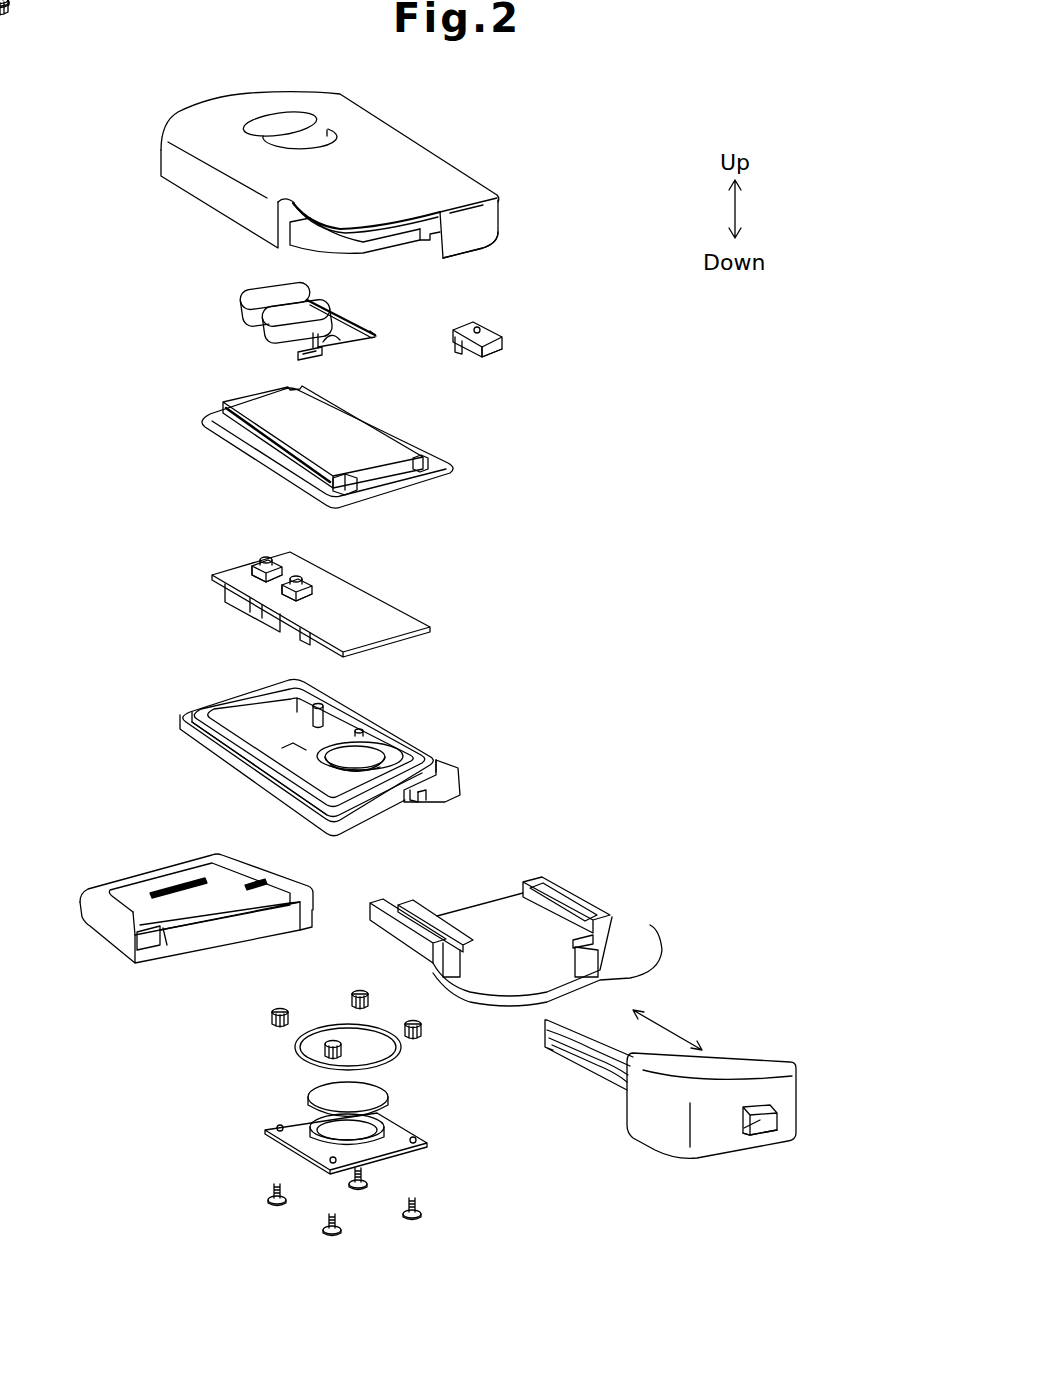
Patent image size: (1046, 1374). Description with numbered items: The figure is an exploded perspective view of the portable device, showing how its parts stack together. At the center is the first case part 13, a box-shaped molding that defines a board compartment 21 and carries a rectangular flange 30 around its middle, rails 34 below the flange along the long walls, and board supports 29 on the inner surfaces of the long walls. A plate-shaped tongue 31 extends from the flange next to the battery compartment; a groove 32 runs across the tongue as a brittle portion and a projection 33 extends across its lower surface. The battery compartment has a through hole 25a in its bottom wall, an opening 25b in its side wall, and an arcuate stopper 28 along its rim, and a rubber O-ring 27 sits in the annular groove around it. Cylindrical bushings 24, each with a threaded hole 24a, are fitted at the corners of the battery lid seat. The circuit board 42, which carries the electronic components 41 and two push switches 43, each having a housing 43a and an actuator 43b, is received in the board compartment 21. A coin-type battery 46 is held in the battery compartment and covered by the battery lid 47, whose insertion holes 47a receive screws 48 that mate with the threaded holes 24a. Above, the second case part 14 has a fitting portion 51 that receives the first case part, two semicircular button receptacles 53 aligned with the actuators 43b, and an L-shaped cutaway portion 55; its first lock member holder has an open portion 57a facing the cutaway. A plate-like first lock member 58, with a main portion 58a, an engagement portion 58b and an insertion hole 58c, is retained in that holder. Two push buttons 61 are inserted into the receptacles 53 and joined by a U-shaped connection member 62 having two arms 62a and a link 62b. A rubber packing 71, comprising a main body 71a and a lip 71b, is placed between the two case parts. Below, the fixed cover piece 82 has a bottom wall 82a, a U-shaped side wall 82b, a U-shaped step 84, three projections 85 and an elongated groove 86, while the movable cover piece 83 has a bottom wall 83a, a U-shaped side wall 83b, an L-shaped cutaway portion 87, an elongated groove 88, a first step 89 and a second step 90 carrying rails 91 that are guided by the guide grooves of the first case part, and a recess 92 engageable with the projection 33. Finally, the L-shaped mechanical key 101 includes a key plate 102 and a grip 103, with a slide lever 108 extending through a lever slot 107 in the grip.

The first case part 13 is at (173, 704).
The second case part 14 is at (443, 128).
The board compartment 21 is at (257, 710).
The bushing 24 is at (423, 1030).
The threaded hole 24a is at (413, 1020).
The through hole 25a is at (375, 752).
The opening 25b is at (403, 760).
The rubber O-ring 27 is at (297, 1053).
The arcuate stopper 28 is at (357, 772).
The board support 29 is at (359, 728).
The rectangular flange 30 is at (190, 728).
The tongue 31 is at (450, 802).
The groove 32 is at (400, 800).
The projection 33 is at (422, 805).
The rail 34 is at (250, 773).
The electronic component 41 is at (257, 613).
The circuit board 42 is at (393, 610).
The push switch 43 is at (301, 538).
The housing 43a is at (317, 587).
The actuator 43b is at (303, 580).
The battery 46 is at (377, 1092).
The battery lid 47 is at (287, 1148).
The insertion hole 47a is at (330, 1160).
The screw 48 is at (420, 1240).
The fitting portion 51 is at (358, 250).
The button receptacle 53 is at (317, 135).
The L-shaped cutaway portion 55 is at (440, 230).
The open portion 57a is at (428, 246).
The first lock member 58 is at (499, 380).
The main portion 58a is at (490, 346).
The engagement portion 58b is at (460, 352).
The insertion hole 58c is at (485, 325).
The push button 61 is at (263, 312).
The U-shaped connection member 62 is at (375, 359).
The arm 62a is at (376, 338).
The link 62b is at (350, 352).
The packing 71 is at (368, 472).
The main body 71a is at (400, 447).
The lip 71b is at (412, 485).
The fixed cover piece 82 is at (196, 950).
The bottom wall 82a is at (193, 935).
The U-shaped side wall 82b is at (140, 945).
The movable cover piece 83 is at (547, 893).
The bottom wall 83a is at (493, 903).
The U-shaped side wall 83b is at (560, 873).
The U-shaped step 84 is at (305, 927).
The projection 85 is at (260, 886).
The elongated groove 86 is at (95, 892).
The L-shaped cutaway portion 87 is at (583, 972).
The elongated groove 88 is at (457, 973).
The first step 89 is at (453, 907).
The second step 90 is at (607, 920).
The rail 91 is at (477, 948).
The recess 92 is at (575, 943).
The mechanical key 101 is at (630, 1109).
The key plate 102 is at (602, 1085).
The grip 103 is at (640, 1132).
The lever slot 107 is at (747, 1135).
The slide lever 108 is at (778, 1122).